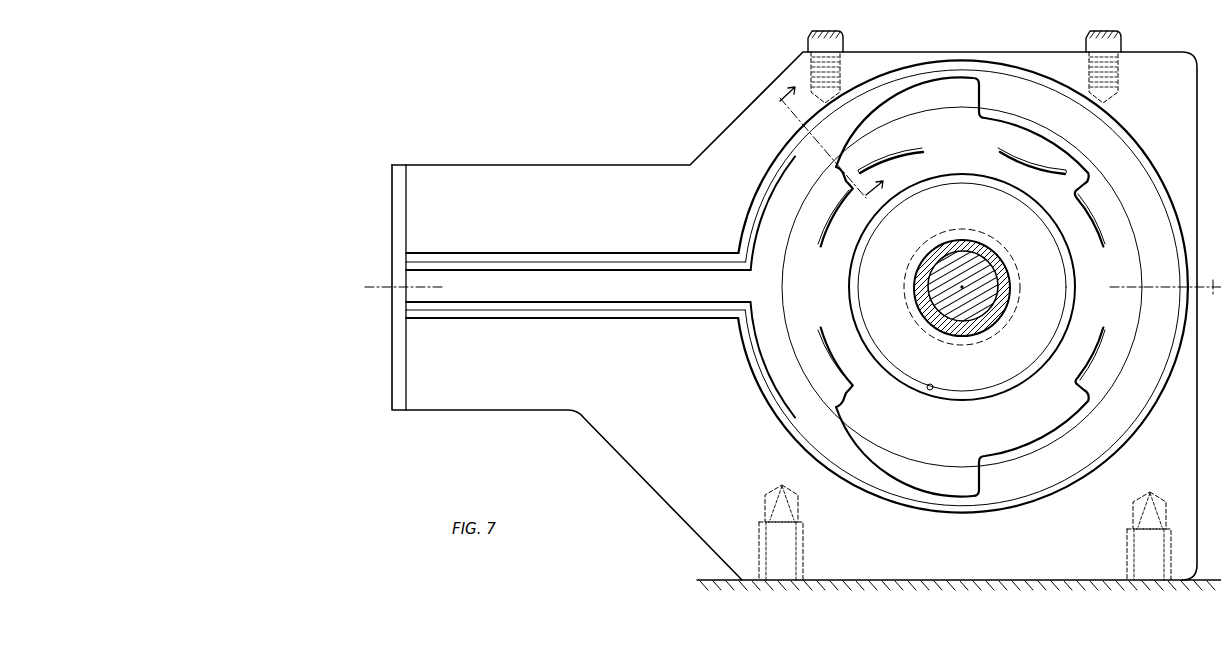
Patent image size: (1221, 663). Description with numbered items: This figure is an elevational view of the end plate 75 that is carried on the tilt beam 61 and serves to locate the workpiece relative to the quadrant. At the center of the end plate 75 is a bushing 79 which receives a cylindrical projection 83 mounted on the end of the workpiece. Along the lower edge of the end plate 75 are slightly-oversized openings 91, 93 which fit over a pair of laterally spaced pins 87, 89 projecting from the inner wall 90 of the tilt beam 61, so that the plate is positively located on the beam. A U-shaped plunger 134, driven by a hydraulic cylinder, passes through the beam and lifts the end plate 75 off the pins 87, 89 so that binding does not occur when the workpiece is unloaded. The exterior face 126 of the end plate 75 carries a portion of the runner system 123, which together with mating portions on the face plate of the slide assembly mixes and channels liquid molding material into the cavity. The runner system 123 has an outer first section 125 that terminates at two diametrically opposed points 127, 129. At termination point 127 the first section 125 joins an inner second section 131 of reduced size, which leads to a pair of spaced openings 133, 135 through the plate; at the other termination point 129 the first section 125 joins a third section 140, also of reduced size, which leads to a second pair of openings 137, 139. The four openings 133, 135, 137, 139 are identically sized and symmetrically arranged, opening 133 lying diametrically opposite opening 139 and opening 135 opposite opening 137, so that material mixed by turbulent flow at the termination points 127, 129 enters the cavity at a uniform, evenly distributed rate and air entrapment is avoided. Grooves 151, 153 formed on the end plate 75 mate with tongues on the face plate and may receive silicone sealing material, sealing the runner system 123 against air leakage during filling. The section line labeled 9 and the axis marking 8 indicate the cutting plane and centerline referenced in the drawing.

The section line axis 8 is at (375, 292).
The section line 9- 9 is at (822, 151).
The tilt beam 61 is at (922, 578).
The end plate 75 is at (779, 58).
The bushing 79 is at (1012, 290).
The cylindrical projection 83 is at (977, 240).
The pin 87 is at (787, 545).
The pin 89 is at (1132, 546).
The inner wall 90 is at (716, 578).
The opening 91 is at (800, 505).
The opening 93 is at (1132, 521).
The runner system 123 is at (758, 173).
The first section 125 is at (768, 257).
The exterior face 126 is at (1167, 93).
The termination point 127 is at (960, 121).
The termination point 129 is at (961, 450).
The second section 131 is at (1050, 149).
The opening 133 is at (912, 155).
The plunger 134 is at (876, 563).
The opening 135 is at (1091, 215).
The opening 137 is at (836, 327).
The opening 139 is at (1097, 351).
The third section 140 is at (1066, 418).
The groove 151 is at (668, 316).
The groove 153 is at (933, 385).